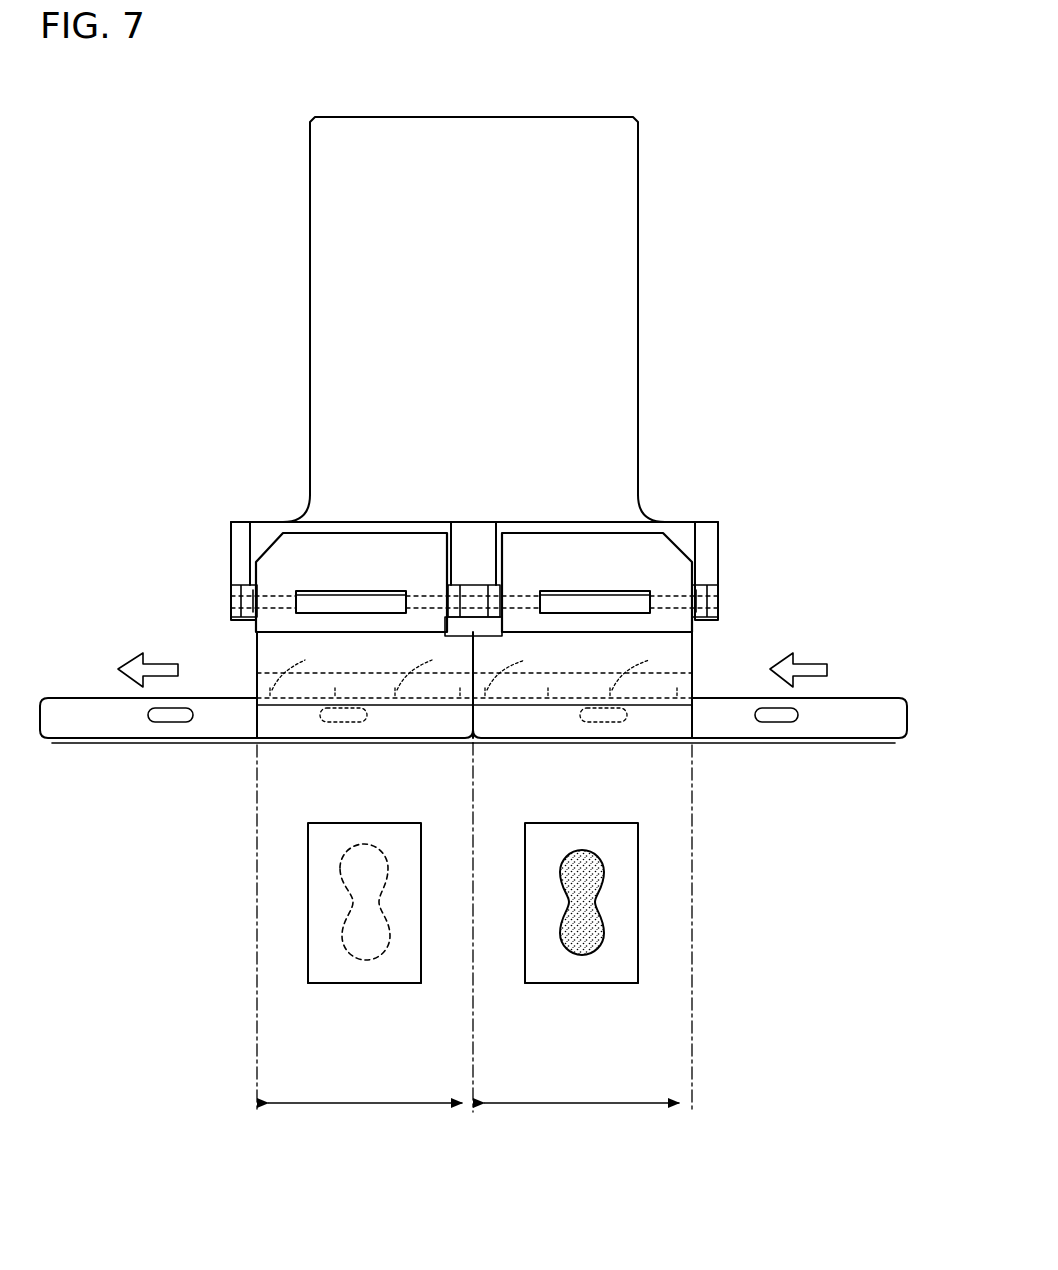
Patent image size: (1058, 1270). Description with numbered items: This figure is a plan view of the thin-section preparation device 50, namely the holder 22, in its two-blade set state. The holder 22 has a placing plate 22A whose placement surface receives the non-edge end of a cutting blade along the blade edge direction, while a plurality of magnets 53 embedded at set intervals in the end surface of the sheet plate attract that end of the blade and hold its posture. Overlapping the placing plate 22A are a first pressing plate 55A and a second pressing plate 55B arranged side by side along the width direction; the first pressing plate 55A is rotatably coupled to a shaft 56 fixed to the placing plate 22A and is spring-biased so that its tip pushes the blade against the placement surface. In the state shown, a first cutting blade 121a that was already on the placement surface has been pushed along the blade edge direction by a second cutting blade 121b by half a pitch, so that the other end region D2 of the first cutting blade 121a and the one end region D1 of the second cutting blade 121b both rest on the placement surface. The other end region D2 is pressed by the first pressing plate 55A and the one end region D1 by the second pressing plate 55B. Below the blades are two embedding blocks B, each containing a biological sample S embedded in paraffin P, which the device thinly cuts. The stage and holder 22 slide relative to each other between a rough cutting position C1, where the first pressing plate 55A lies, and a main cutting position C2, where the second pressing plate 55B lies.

The thin-section preparation device 50 is at (721, 113).
The holder 22 is at (722, 243).
The placing plate 22A is at (683, 530).
The first pressing plate 55A is at (378, 645).
The second pressing plate 55B is at (520, 645).
The shaft 56 is at (353, 600).
The magnets 53 is at (474, 669).
The first cutting blade 121a is at (171, 746).
The second cutting blade 121b is at (724, 746).
The one end region D1 is at (93, 743).
The other end region D2 is at (418, 743).
The paraffin P is at (405, 968).
The biological sample S is at (355, 942).
The embedding block B is at (364, 983).
The rough cutting position C1 is at (365, 1121).
The main cutting position C2 is at (581, 1121).